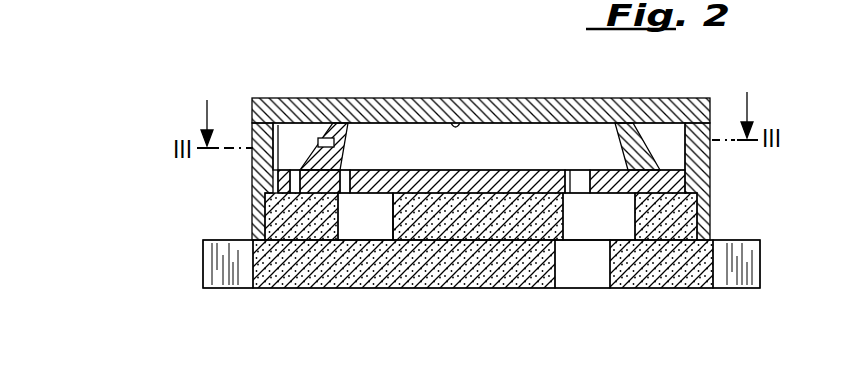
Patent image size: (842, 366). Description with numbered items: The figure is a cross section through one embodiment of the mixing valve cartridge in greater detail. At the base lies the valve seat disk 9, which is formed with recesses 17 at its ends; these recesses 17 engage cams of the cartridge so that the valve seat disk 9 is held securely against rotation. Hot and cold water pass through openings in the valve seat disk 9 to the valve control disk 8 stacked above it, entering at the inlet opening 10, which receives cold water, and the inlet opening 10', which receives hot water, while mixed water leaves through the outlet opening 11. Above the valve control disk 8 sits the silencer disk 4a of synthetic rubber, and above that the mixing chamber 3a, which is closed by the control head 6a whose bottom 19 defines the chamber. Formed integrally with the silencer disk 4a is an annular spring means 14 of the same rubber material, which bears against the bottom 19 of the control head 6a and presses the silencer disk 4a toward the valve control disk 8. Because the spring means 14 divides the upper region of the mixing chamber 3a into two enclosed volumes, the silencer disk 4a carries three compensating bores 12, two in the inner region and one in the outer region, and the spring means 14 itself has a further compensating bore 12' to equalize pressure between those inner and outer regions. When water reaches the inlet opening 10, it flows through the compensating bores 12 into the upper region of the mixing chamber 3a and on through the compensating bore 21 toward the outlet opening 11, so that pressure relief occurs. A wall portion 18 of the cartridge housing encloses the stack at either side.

The mixing chamber 3a is at (726, 167).
The silencer disk 4a is at (492, 180).
The control head 6a is at (494, 98).
The valve control disk 8 is at (481, 216).
The valve seat disk 9 is at (481, 264).
The inlet opening 10 is at (365, 258).
The inlet opening 10' is at (417, 258).
The outlet opening 11 is at (590, 224).
The compensating bore 12 is at (319, 169).
The compensating bore 12' is at (345, 146).
The spring means 14 is at (625, 123).
The recesses 17 is at (247, 280).
The side wall 18 is at (264, 219).
The bottom of the control head 19 is at (455, 119).
The compensating bore 21 is at (582, 166).